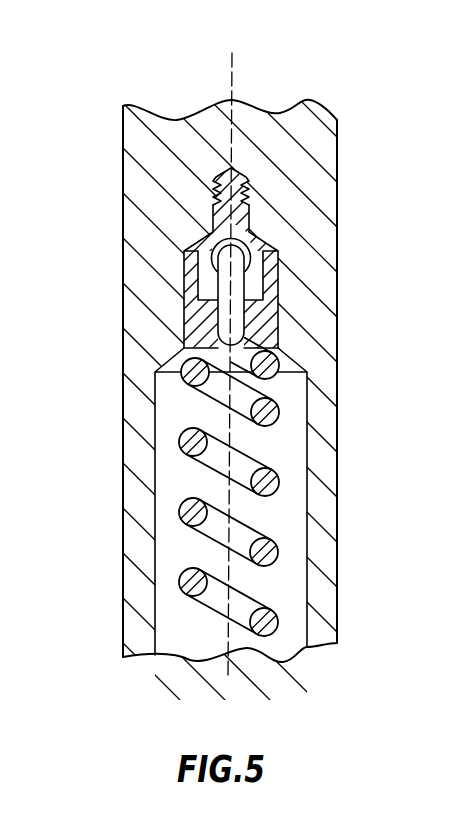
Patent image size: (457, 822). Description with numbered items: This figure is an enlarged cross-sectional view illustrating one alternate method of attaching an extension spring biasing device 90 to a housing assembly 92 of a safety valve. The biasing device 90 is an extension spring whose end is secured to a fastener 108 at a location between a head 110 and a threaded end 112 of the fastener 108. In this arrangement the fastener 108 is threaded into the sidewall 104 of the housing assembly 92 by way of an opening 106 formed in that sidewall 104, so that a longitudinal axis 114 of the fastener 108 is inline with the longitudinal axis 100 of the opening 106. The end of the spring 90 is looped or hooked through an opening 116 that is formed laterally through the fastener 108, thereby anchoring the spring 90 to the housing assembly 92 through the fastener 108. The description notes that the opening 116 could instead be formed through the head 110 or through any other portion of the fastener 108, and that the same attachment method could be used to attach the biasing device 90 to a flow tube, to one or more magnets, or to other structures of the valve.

The extension spring biasing device 90 is at (178, 503).
The housing assembly 92 is at (119, 263).
The longitudinal axis of the opening 100 is at (228, 660).
The sidewall 104 is at (157, 332).
The opening 106 is at (153, 563).
The fastener 108 is at (271, 234).
The head 110 is at (256, 284).
The threaded end 112 is at (249, 191).
The longitudinal axis of the fastener 114 is at (232, 68).
The opening 116 is at (249, 268).